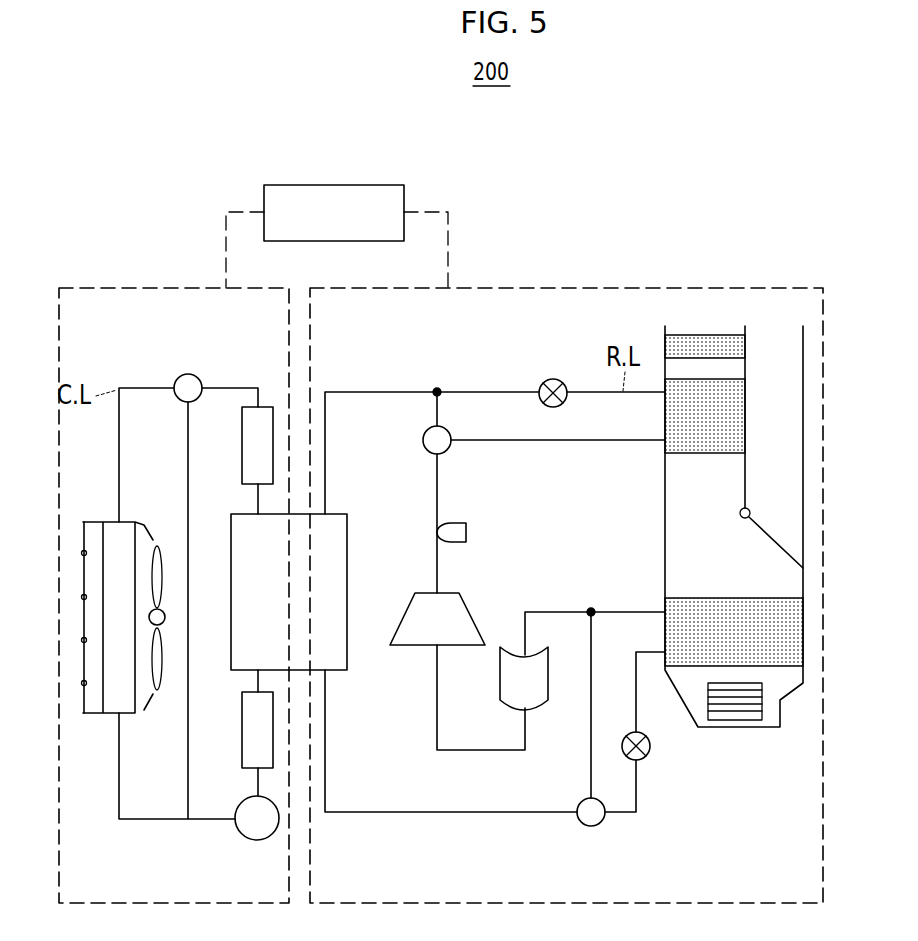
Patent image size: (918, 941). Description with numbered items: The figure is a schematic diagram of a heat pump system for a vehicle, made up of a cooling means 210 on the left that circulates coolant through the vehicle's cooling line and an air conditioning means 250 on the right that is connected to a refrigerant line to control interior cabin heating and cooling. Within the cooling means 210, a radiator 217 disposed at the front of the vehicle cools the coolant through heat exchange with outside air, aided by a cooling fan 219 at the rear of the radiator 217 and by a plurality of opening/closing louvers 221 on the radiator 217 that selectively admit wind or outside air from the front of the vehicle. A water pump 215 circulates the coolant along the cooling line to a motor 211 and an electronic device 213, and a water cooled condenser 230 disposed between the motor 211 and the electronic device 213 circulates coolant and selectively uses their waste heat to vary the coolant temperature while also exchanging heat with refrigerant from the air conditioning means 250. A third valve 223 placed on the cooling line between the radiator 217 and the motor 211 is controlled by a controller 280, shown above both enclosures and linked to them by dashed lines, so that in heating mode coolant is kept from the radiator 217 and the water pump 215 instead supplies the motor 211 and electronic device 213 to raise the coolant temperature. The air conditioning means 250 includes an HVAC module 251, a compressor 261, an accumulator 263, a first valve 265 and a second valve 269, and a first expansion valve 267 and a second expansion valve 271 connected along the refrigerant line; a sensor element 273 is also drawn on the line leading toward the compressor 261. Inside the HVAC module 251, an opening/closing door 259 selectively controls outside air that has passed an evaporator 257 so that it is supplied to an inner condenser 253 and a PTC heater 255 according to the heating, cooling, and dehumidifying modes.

The cooling means 210 is at (91, 286).
The motor 211 is at (240, 445).
The electronic device 213 is at (240, 730).
The water pump 215 is at (258, 841).
The radiator 217 is at (110, 522).
The cooling fan 219 is at (165, 625).
The opening/closing louvers 221 is at (84, 686).
The third valve 223 is at (187, 373).
The water cooled condenser 230 is at (350, 523).
The air conditioning means 250 is at (682, 286).
The HVAC module 251 is at (780, 456).
The inner condenser 253 is at (746, 428).
The PTC heater 255 is at (746, 344).
The evaporator 257 is at (785, 635).
The opening/closing door 259 is at (775, 540).
The compressor 261 is at (406, 648).
The accumulator 263 is at (540, 712).
The first valve 265 is at (422, 440).
The first expansion valve 267 is at (553, 379).
The second valve 269 is at (591, 828).
The second expansion valve 271 is at (652, 757).
The sensor 273 is at (468, 532).
The controller 280 is at (326, 183).